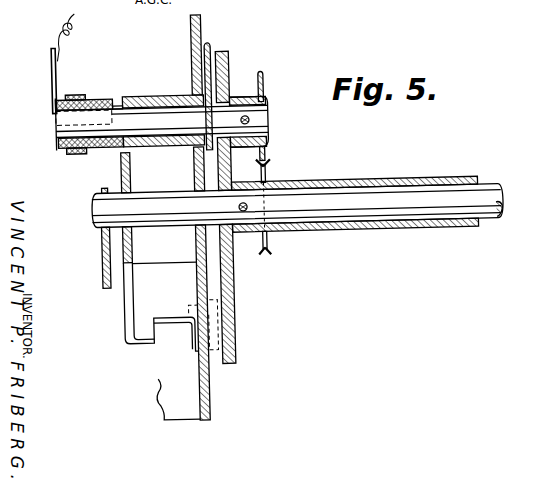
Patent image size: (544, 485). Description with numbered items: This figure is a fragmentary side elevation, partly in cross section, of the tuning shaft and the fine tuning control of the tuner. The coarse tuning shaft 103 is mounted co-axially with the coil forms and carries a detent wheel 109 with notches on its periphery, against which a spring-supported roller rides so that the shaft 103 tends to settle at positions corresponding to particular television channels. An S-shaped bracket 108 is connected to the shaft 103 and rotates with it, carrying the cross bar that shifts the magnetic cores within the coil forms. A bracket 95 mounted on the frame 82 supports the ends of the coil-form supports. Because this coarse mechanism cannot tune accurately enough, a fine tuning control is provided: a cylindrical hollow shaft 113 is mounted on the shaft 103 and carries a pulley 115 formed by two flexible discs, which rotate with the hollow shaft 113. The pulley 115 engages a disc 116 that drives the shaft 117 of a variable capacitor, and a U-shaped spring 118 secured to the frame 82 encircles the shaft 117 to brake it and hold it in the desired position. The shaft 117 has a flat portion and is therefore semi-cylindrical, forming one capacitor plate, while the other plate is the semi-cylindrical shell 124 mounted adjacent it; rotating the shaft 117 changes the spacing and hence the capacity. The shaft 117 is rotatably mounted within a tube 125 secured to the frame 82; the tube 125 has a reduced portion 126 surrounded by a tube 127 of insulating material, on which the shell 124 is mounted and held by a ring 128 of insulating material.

The frame 82 is at (196, 40).
The bracket 95 is at (165, 321).
The shaft 103 is at (440, 203).
The S-shaped bracket 108 is at (101, 253).
The detent wheel 109 is at (230, 68).
The cylindrical hollow shaft 113 is at (354, 182).
The pulley 115 is at (271, 175).
The disc 116 is at (266, 79).
The shaft 117 is at (264, 120).
The U-shaped spring 118 is at (216, 50).
The semi-cylindrical shell 124 is at (96, 96).
The tube 125 is at (146, 96).
The reduced portion 126 is at (59, 138).
The tube of insulating material 127 is at (91, 148).
The ring of insulating material 128 is at (72, 93).